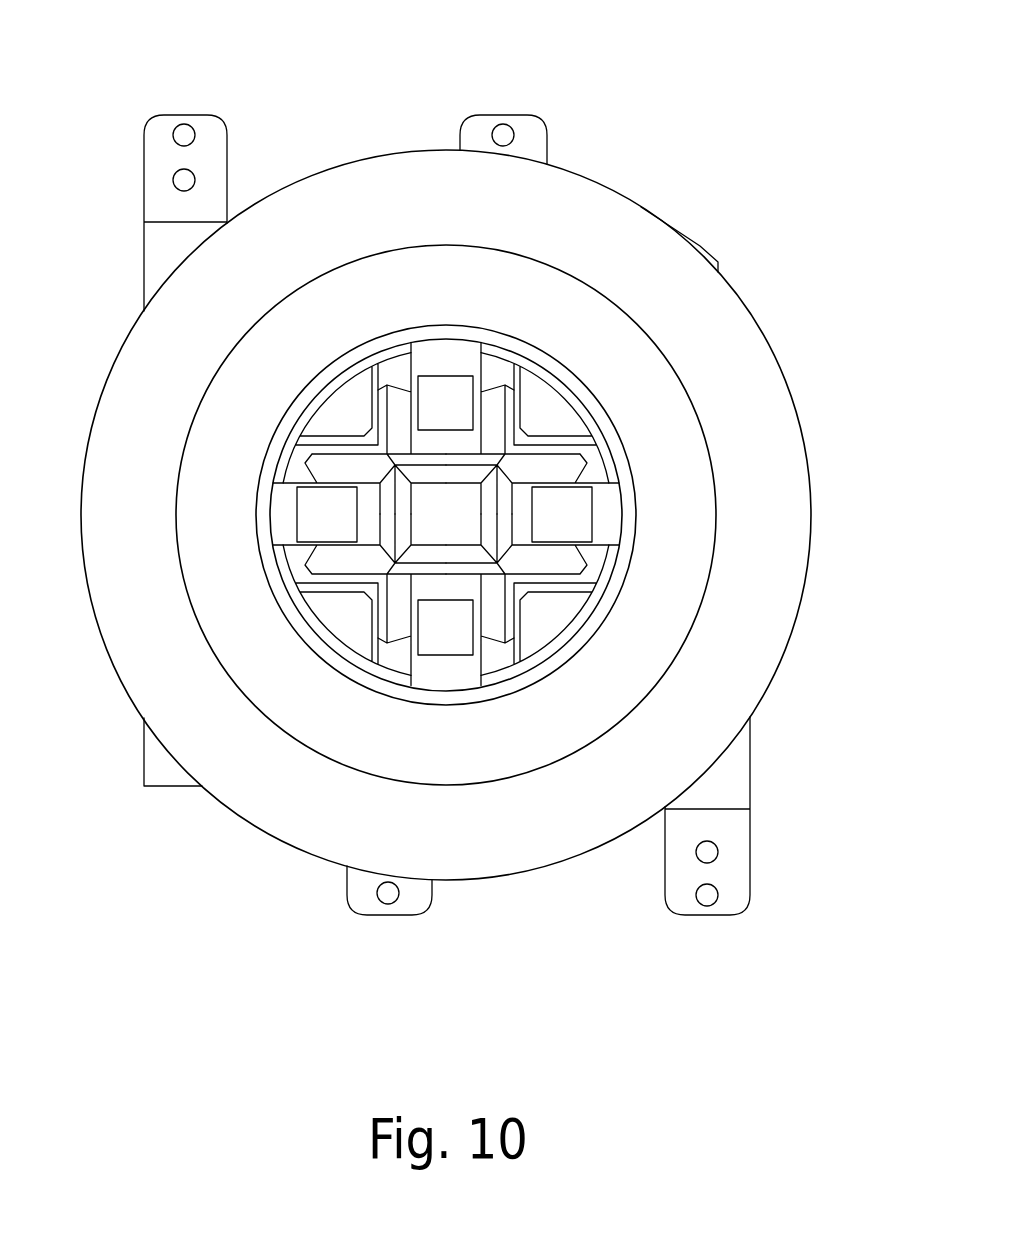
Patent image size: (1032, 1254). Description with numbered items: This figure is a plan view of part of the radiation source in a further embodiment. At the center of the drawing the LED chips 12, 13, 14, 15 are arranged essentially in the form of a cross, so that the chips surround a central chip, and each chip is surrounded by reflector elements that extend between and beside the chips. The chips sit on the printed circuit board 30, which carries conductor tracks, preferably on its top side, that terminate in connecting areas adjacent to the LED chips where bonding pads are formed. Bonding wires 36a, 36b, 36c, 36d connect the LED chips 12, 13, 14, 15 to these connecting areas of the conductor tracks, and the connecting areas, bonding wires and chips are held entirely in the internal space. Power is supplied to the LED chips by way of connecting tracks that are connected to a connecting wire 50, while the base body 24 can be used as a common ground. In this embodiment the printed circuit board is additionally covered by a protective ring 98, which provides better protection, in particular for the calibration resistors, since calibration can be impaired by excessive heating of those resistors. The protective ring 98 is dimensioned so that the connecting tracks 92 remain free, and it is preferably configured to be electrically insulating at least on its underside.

The LED chip 12 is at (310, 528).
The LED chip 13 is at (429, 421).
The LED chip 14 is at (545, 528).
The LED chip 15 is at (429, 646).
The base body 24 is at (590, 448).
The printed circuit board 30 is at (155, 773).
The bonding wire 36a is at (333, 418).
The bonding wire 36b is at (555, 420).
The bonding wire 36c is at (573, 632).
The bonding wire 36d is at (333, 607).
The connecting wire 50 is at (520, 740).
The connecting tracks 92 is at (188, 113).
The protective ring 98 is at (780, 560).